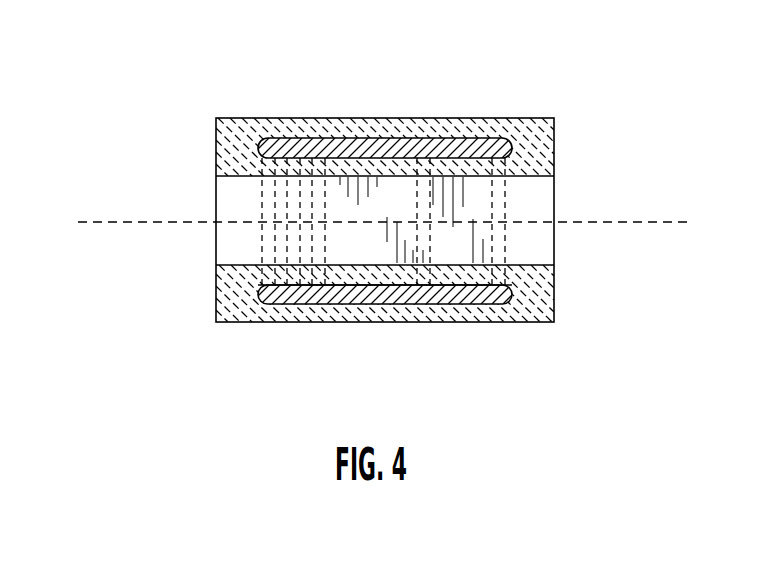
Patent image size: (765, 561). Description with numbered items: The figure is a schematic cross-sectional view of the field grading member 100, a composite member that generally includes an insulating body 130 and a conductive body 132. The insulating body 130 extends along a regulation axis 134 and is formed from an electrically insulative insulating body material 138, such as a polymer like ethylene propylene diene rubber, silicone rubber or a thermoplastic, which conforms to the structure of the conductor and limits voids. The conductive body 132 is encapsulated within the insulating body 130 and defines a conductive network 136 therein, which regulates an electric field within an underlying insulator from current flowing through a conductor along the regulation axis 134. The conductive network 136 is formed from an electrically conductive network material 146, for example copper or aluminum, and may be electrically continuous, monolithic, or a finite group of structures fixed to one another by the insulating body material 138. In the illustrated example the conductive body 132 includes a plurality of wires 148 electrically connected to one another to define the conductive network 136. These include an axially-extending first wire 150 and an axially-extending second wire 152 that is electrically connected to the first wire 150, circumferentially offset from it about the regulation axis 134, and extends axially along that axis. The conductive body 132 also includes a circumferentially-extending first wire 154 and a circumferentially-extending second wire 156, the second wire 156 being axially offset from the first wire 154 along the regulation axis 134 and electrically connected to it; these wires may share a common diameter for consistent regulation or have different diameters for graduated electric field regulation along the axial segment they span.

The field grading member 100 is at (175, 422).
The insulating body 130 is at (545, 138).
The conductive body 132 is at (366, 128).
The regulation axis 134 is at (598, 225).
The conductive network 136 is at (242, 243).
The insulating body material 138 is at (410, 310).
The network material 146 is at (350, 292).
The plurality of wires 148 is at (272, 203).
The axially-extending first wire 150 is at (293, 136).
The axially-extending second wire 152 is at (455, 302).
The circumferentially-extending first wire 154 is at (320, 241).
The circumferentially-extending second wire 156 is at (500, 220).